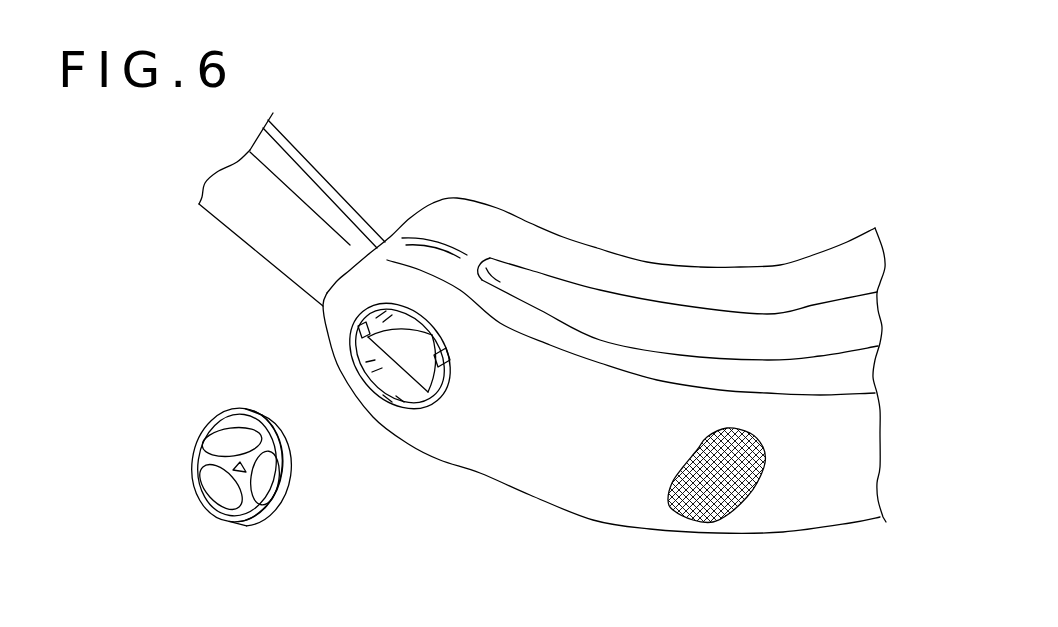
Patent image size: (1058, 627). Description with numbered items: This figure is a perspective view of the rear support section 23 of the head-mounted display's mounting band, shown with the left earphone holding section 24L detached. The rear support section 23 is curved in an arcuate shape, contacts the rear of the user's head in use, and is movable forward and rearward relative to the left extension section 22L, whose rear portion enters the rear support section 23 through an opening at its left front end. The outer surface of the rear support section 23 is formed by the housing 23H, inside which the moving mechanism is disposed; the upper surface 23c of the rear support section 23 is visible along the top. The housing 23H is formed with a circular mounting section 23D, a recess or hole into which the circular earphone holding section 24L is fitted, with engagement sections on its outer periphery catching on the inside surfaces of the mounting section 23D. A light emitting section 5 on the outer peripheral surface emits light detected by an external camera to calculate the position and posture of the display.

The left extension section 22L is at (253, 256).
The rear support section 23 is at (604, 405).
The upper surface 23c is at (670, 325).
The mounting section 23D is at (388, 378).
The housing 23H is at (655, 533).
The light emitting section 5 is at (713, 513).
The left earphone holding section 24L is at (205, 527).